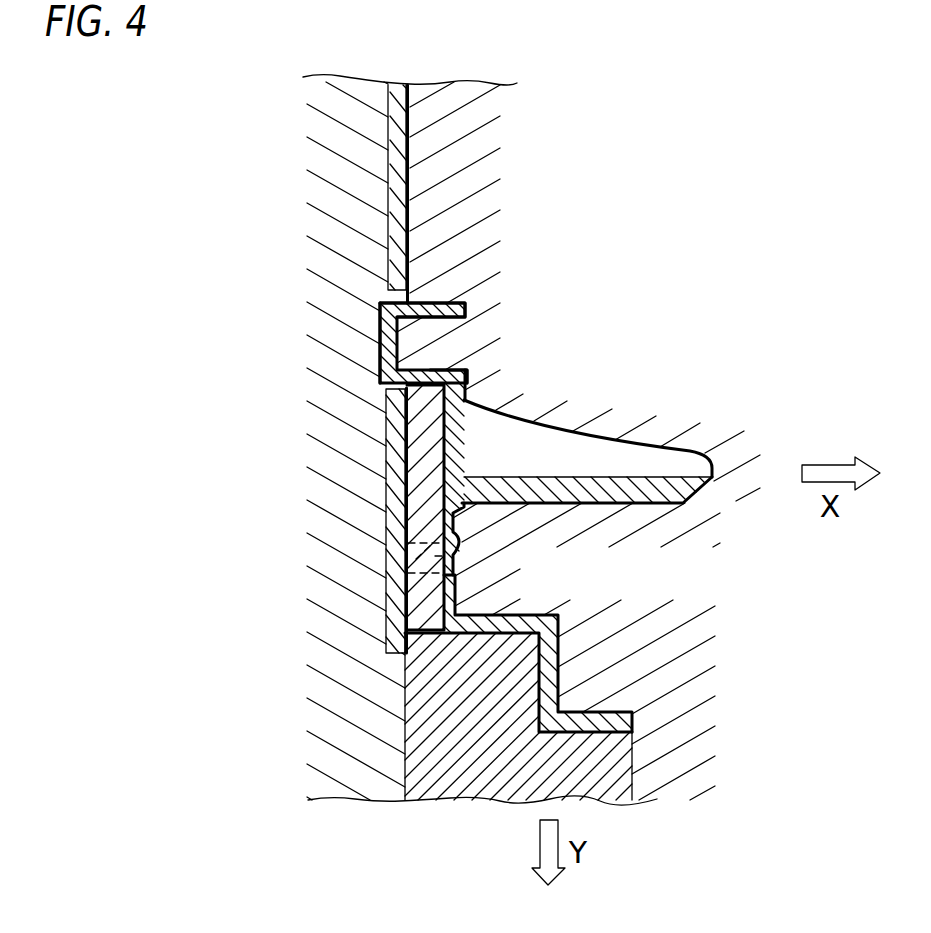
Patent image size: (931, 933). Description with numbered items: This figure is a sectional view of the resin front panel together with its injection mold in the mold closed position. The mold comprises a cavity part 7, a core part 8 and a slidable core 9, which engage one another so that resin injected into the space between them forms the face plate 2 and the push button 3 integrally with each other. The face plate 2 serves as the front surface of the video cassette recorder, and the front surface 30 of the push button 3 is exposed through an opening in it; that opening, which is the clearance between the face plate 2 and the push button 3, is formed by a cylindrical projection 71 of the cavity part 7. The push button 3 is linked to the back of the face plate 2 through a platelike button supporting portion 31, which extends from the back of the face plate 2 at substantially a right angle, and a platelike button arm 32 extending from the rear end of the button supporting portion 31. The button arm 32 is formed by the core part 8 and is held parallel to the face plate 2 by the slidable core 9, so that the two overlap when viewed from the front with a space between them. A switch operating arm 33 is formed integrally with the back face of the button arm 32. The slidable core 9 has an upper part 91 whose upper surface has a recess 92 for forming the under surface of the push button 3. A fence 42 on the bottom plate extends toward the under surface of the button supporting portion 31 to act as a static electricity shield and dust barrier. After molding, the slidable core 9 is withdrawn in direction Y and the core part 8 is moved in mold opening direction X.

The face plate 2 is at (392, 192).
The push button 3 is at (435, 300).
The cavity part 7 is at (348, 740).
The core part 8 is at (680, 763).
The slidable core 9 is at (487, 750).
The front surface 30 is at (372, 348).
The button supporting portion 31 is at (387, 572).
The button arm 32 is at (467, 398).
The switch operating arm 33 is at (573, 453).
The fence 42 is at (518, 565).
The cylindrical projection 71 is at (385, 298).
The upper part 91 is at (407, 457).
The recess 92 is at (440, 373).